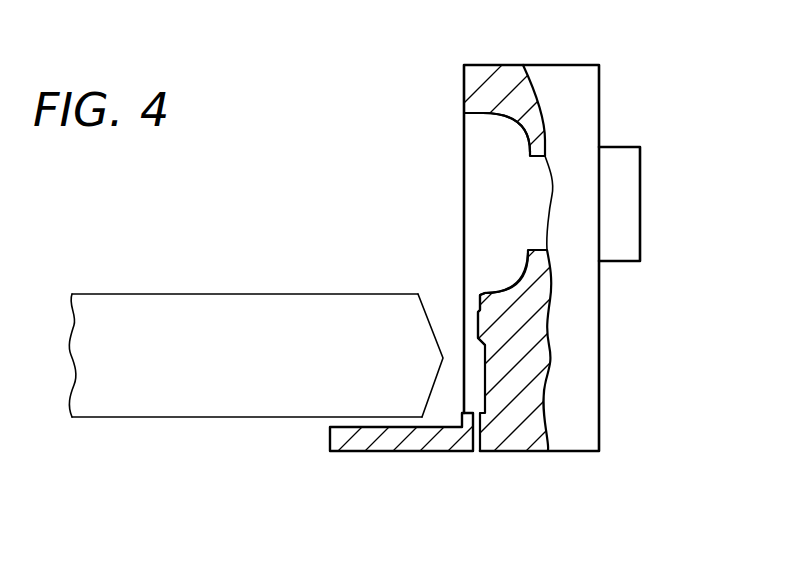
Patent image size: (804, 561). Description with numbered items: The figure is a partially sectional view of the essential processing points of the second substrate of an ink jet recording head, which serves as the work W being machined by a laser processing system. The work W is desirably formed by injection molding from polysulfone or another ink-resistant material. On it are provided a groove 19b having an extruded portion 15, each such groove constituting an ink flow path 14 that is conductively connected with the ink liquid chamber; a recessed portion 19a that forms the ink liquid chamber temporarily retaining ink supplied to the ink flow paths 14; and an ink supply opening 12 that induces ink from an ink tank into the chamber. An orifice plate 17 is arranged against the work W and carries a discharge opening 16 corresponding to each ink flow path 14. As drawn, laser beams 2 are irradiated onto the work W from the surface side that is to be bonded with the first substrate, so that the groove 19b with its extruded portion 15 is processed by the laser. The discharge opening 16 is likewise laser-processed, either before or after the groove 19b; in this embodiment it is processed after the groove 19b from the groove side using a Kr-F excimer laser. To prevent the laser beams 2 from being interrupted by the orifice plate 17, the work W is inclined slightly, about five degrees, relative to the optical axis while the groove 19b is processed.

The work W is at (566, 65).
The laser beams 2 is at (144, 296).
The ink supply opening 12 is at (637, 147).
The ink flow path 14 is at (455, 358).
The extruded portion 15 is at (485, 342).
The discharge opening 16 is at (475, 451).
The orifice plate 17 is at (332, 442).
The recessed portion 19a is at (477, 113).
The groove 19b is at (477, 372).